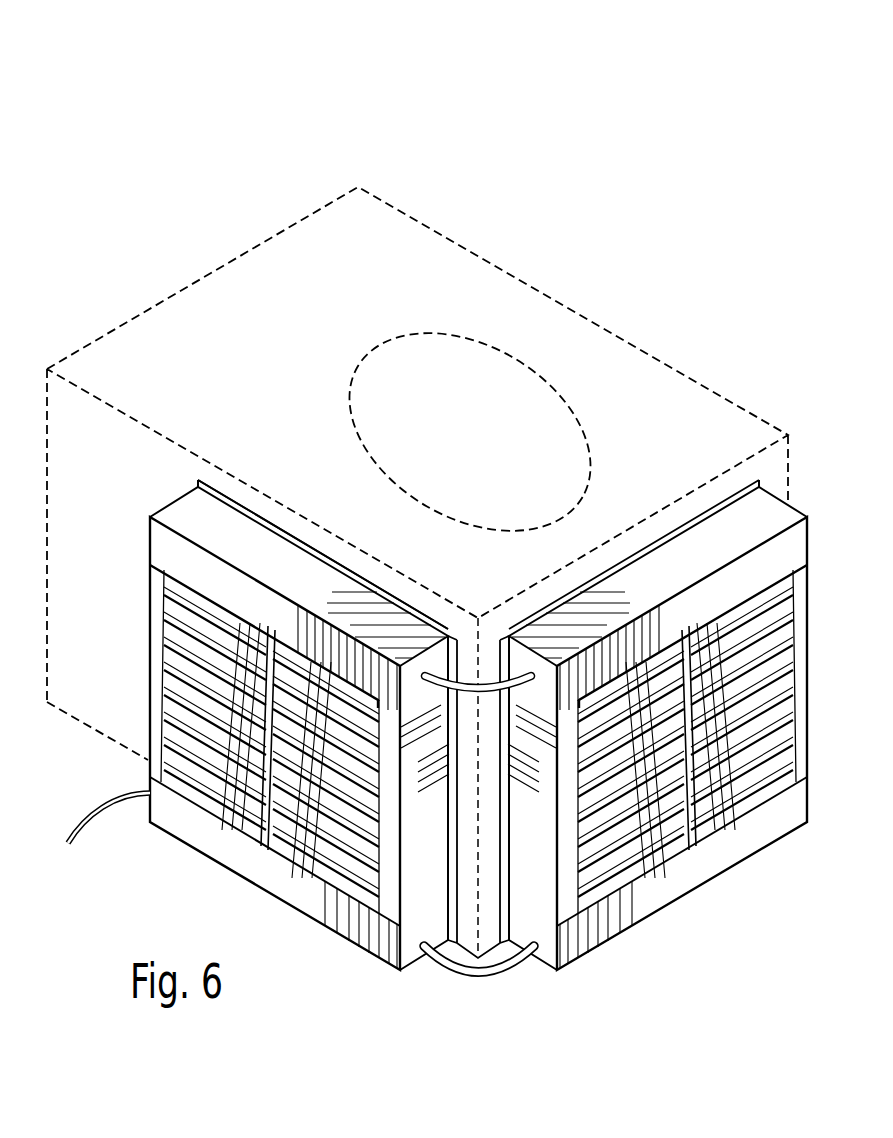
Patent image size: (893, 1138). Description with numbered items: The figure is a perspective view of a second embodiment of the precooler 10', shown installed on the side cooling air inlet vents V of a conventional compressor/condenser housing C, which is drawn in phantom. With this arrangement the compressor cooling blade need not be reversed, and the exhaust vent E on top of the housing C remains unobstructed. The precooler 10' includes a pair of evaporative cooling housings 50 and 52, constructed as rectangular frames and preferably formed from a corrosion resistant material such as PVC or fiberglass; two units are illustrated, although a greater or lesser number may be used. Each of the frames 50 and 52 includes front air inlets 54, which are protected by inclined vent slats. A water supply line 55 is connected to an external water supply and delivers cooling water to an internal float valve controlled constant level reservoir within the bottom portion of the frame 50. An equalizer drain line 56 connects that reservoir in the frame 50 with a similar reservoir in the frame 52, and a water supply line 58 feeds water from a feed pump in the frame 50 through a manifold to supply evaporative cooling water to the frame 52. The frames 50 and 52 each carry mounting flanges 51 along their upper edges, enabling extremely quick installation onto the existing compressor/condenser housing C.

The precooler 10' is at (426, 525).
The compressor/condenser housing C is at (213, 292).
The exhaust vent E is at (548, 380).
The side cooling air inlet vents V is at (193, 481).
The evaporative cooling housing 50 is at (237, 536).
The mounting flanges 51 is at (341, 563).
The evaporative cooling housing 52 is at (660, 572).
The front air inlets 54 is at (170, 697).
The water supply line 55 is at (102, 802).
The equalizer drain line 56 is at (518, 962).
The water supply line 58 is at (471, 618).